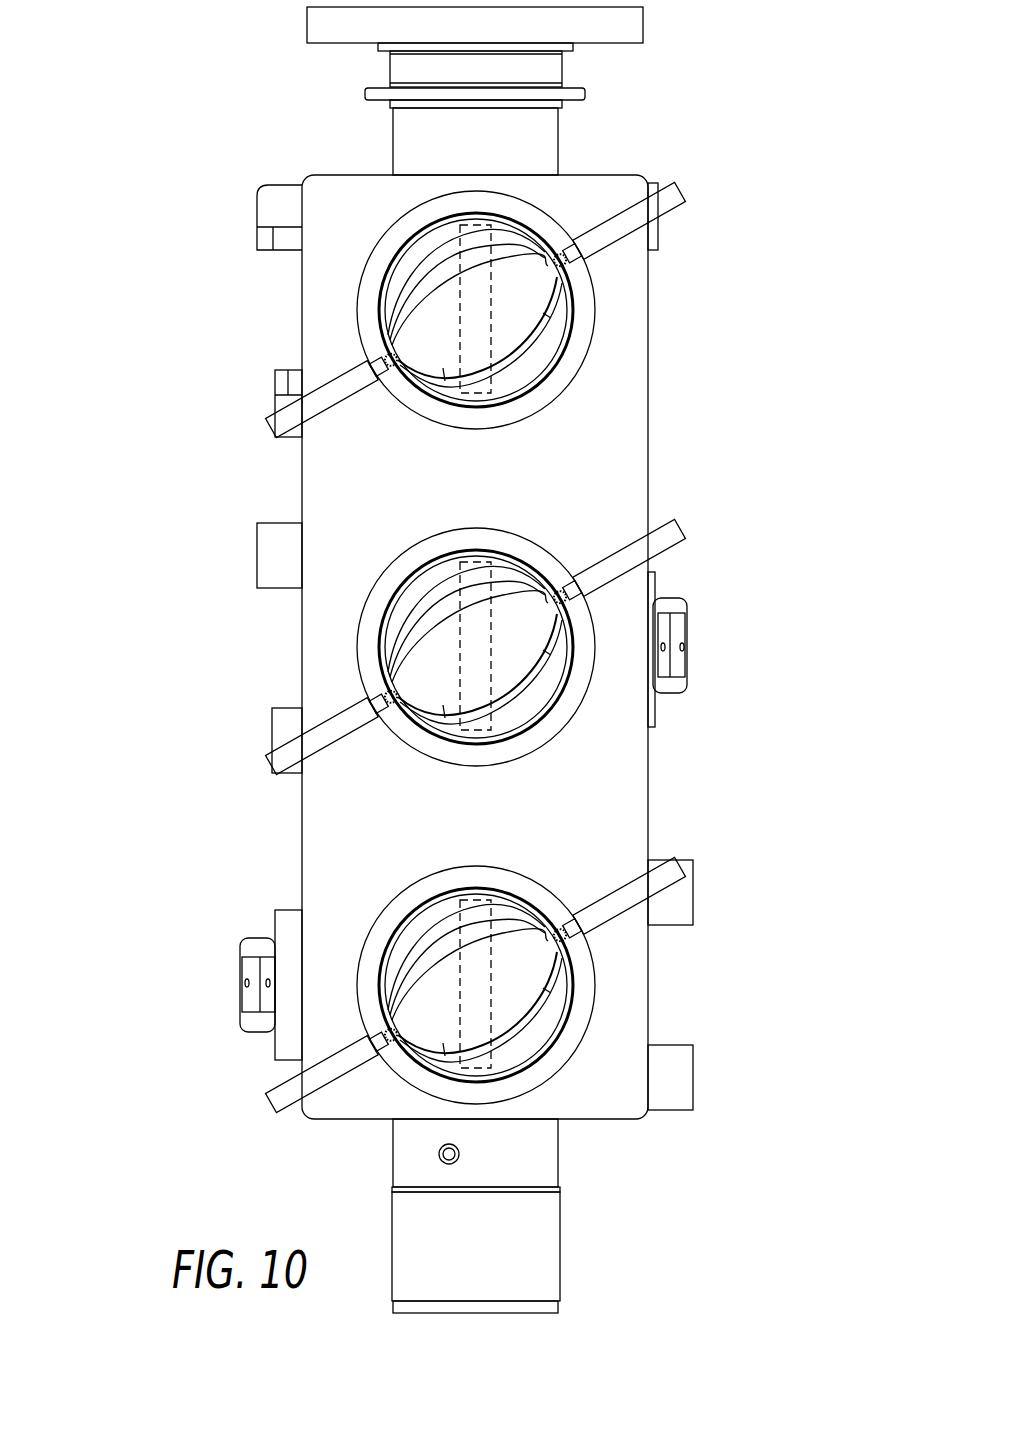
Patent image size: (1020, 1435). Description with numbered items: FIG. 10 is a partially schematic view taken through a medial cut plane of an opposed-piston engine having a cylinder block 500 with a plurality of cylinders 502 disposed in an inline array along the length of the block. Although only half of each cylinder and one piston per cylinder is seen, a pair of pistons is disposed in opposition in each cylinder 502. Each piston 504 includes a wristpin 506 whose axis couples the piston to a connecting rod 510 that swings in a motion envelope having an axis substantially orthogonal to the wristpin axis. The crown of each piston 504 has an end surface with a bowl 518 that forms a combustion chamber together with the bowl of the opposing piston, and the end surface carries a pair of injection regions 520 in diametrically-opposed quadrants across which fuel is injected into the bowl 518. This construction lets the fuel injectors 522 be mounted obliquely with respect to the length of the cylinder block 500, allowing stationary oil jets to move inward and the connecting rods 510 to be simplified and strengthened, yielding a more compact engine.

The cylinder block 500 is at (648, 388).
The cylinder 502 is at (557, 393).
The piston 504 is at (477, 406).
The wristpin 506 is at (460, 232).
The connecting rod 510 is at (197, 345).
The bowl 518 is at (543, 309).
The injection region 520 is at (565, 273).
The fuel injector 522 is at (672, 195).